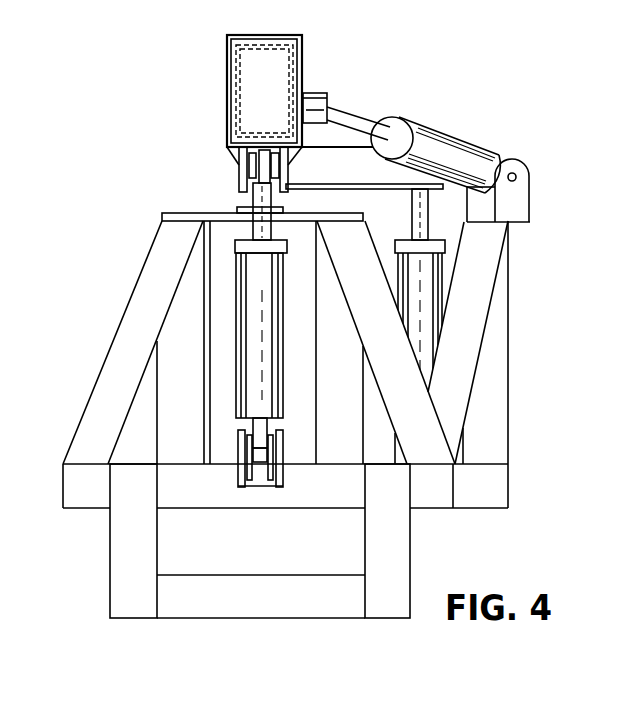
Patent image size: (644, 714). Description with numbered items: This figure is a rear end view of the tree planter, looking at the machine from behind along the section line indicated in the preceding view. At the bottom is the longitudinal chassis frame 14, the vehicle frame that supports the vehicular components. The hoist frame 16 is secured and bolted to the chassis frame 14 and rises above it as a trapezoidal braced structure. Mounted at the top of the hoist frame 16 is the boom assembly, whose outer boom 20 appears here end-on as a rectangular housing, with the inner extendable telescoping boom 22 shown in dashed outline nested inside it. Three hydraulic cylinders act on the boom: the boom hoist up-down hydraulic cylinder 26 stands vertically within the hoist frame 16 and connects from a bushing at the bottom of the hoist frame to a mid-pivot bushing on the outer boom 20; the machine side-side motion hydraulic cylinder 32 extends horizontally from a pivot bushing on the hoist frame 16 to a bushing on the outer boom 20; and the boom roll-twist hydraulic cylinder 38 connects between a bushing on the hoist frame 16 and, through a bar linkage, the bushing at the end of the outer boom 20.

The longitudinal chassis frame 14 is at (410, 560).
The hoist frame 16 is at (475, 510).
The outer boom 20 is at (302, 63).
The inner extendable telescoping boom 22 is at (240, 70).
The boom hoist up-down hydraulic cylinder 26 is at (285, 342).
The machine side-side motion hydraulic cylinder 32 is at (448, 130).
The boom roll-twist hydraulic cylinder 38 is at (398, 268).